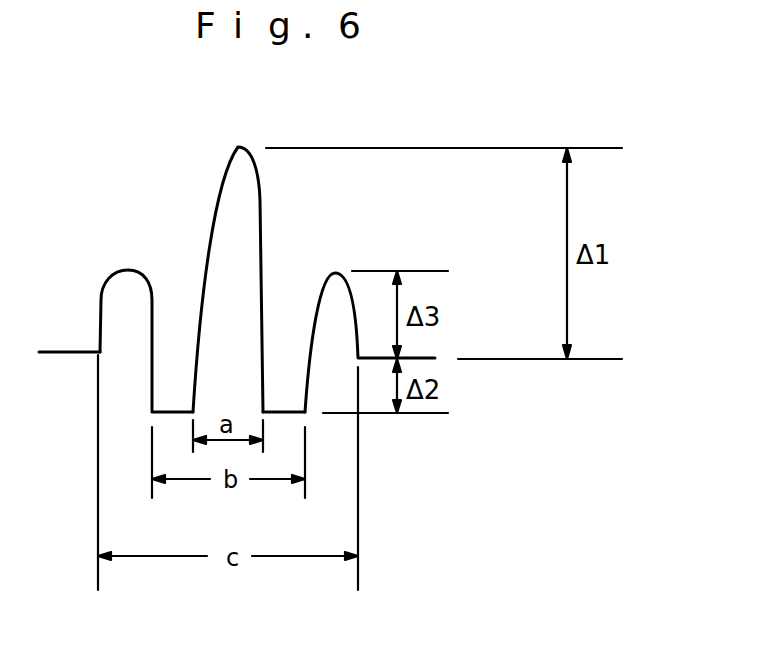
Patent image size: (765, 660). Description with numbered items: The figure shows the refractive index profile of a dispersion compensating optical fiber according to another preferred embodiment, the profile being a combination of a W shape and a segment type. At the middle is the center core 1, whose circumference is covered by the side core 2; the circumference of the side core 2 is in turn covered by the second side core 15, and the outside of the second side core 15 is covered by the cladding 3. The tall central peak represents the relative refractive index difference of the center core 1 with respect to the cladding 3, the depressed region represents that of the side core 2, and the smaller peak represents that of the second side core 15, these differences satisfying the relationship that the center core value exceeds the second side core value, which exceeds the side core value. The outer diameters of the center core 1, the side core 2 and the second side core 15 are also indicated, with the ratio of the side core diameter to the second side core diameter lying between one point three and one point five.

The center core 1 is at (225, 192).
The side core 2 is at (290, 410).
The cladding 3 is at (53, 351).
The second side core 15 is at (333, 283).